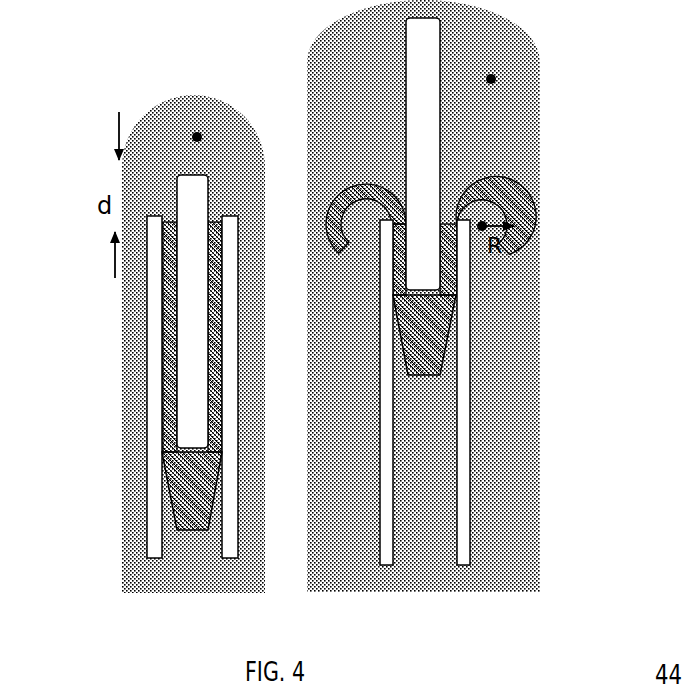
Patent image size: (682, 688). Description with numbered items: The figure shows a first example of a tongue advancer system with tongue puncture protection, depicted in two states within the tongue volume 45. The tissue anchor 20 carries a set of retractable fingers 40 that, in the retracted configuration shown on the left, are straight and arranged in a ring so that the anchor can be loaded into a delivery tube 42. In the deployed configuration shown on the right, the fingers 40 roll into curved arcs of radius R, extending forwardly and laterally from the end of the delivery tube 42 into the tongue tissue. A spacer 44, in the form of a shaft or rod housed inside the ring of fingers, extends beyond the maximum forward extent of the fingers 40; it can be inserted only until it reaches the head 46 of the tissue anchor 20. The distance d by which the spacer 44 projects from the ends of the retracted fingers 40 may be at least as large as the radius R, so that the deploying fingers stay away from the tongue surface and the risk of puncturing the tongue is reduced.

The tissue anchor 20 is at (172, 566).
The retractable fingers 40 is at (172, 331).
The delivery tube 42 is at (147, 404).
The spacer 44 is at (208, 182).
The tongue volume 45 is at (197, 137).
The head 46 is at (180, 497).